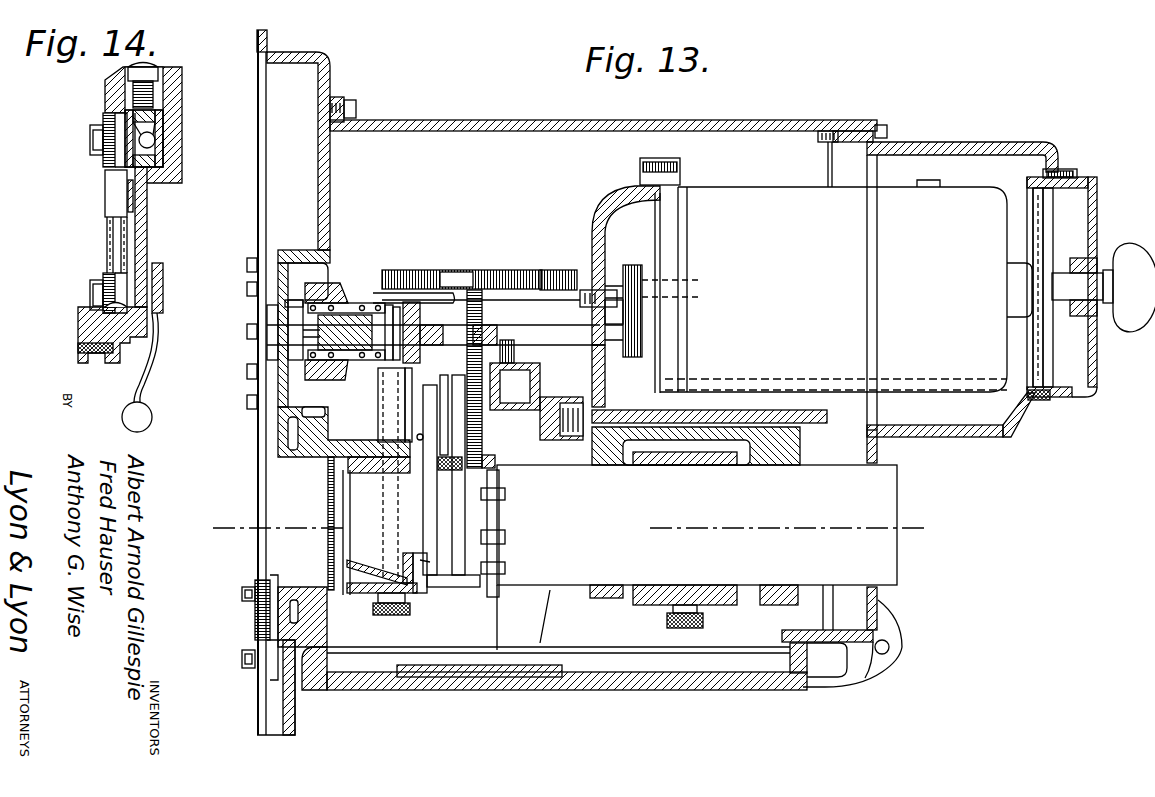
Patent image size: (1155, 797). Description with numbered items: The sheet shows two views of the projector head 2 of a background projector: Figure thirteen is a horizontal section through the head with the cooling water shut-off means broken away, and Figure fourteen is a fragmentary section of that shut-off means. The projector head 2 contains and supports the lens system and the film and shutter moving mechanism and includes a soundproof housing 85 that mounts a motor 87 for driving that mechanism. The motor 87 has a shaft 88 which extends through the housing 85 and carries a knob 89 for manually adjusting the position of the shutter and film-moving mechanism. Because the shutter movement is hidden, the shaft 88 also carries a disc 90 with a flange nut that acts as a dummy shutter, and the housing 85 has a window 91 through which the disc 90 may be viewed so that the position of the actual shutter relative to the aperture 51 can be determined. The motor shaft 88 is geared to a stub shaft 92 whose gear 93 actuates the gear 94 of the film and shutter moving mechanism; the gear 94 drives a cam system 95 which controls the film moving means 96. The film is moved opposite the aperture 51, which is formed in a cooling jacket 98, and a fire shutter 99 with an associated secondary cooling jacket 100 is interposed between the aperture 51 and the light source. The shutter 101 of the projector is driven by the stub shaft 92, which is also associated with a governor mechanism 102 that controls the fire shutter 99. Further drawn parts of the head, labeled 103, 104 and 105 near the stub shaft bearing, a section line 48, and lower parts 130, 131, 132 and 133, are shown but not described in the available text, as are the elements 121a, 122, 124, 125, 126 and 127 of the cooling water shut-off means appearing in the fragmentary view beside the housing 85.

In FIG. 13, the projector head 2 is at (337, 62).
In FIG. 13, the section line 48 is at (238, 524).
In FIG. 13, the aperture 51 is at (425, 535).
In FIG. 14, the soundproof housing 85 is at (148, 232).
In FIG. 13, the soundproof housing 85 is at (737, 120).
In FIG. 13, the motor 87 is at (790, 187).
In FIG. 13, the shaft 88 is at (695, 290).
In FIG. 13, the knob 89 is at (1135, 260).
In FIG. 13, the disc 90 is at (1043, 370).
In FIG. 13, the window 91 is at (1040, 398).
In FIG. 13, the stub shaft 92 is at (545, 335).
In FIG. 13, the gear 93 is at (470, 290).
In FIG. 13, the gear 94 is at (480, 455).
In FIG. 13, the cam system 95 is at (455, 394).
In FIG. 13, the film moving means 96 is at (460, 505).
In FIG. 13, the cooling jacket 98 is at (365, 500).
In FIG. 13, the fire shutter 99 is at (330, 553).
In FIG. 13, the secondary cooling jacket 100 is at (386, 448).
In FIG. 13, the shutter 101 is at (256, 450).
In FIG. 13, the governor mechanism 102 is at (358, 292).
In FIG. 13, the spring 103 is at (365, 355).
In FIG. 13, the bearing wedge 104 is at (345, 303).
In FIG. 13, the bearing collar 105 is at (335, 300).
In FIG. 14, the ball joint 121a is at (170, 115).
In FIG. 14, the adjusting screw 122 is at (175, 75).
In FIG. 14, the sprocket 124 is at (104, 120).
In FIG. 13, the sprocket 124 is at (250, 612).
In FIG. 14, the chain bar 125 is at (108, 232).
In FIG. 14, the lower sprocket 126 is at (108, 267).
In FIG. 14, the lever 127 is at (149, 372).
In FIG. 13, the base plate 130 is at (565, 585).
In FIG. 13, the support block 131 is at (773, 603).
In FIG. 13, the support block 132 is at (717, 604).
In FIG. 13, the knurled nut 133 is at (692, 630).